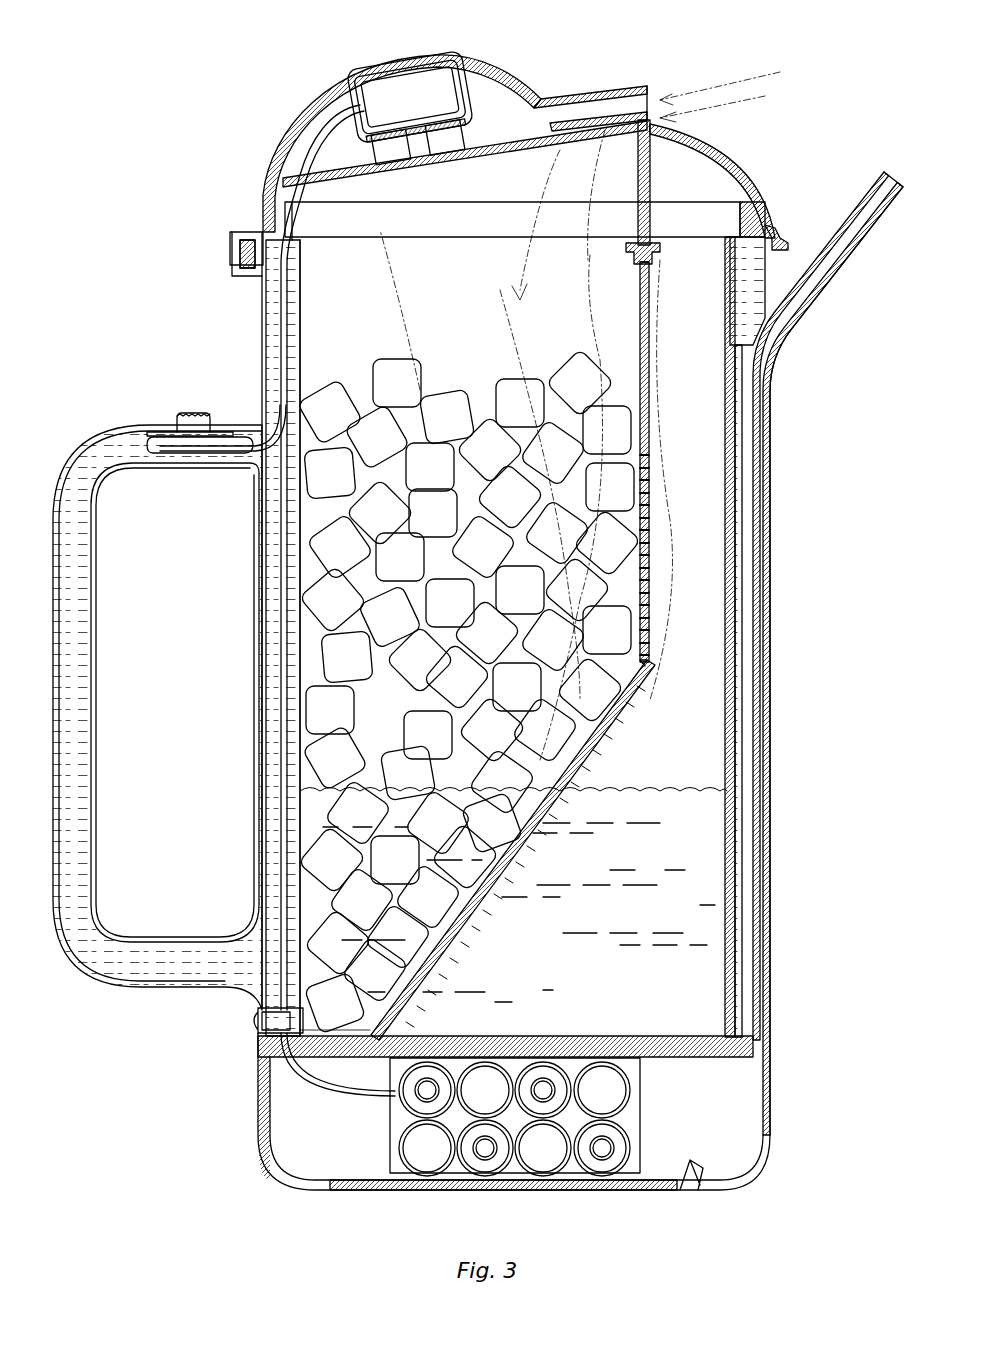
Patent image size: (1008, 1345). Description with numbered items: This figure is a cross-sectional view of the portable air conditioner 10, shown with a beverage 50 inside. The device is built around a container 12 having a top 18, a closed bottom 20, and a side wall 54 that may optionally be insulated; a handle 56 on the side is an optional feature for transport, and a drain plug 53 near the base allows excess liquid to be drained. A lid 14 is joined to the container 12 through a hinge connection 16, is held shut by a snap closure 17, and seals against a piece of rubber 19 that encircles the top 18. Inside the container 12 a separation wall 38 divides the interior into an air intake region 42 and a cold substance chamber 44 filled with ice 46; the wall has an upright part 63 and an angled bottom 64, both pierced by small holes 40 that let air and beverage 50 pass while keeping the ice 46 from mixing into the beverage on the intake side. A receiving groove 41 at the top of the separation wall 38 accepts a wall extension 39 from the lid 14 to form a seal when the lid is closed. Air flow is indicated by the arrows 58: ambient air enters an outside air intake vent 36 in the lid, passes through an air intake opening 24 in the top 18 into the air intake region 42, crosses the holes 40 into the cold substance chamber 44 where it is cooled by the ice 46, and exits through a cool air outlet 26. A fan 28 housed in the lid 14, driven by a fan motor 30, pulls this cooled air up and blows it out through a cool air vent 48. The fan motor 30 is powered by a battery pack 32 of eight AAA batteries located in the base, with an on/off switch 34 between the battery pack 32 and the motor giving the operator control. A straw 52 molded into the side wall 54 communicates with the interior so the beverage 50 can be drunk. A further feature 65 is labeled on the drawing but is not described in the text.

The portable air conditioner 10 is at (142, 52).
The container 12 is at (262, 320).
The lid 14 is at (332, 88).
The hinge connection 16 is at (245, 252).
The snap closure 17 is at (785, 235).
The top 18 is at (556, 240).
The piece of rubber 19 is at (742, 240).
The bottom 20 is at (520, 1038).
The air intake opening 24 is at (675, 252).
The cool air outlet 26 is at (490, 240).
The fan 28 is at (490, 72).
The fan motor 30 is at (385, 90).
The battery pack 32 is at (430, 1148).
The on/off switch 34 is at (190, 410).
The outside air intake vent 36 is at (715, 165).
The separation wall 38 is at (649, 368).
The wall extension 39 is at (638, 150).
The holes 40 is at (649, 480).
The receiving groove 41 is at (636, 246).
The air intake region 42 is at (700, 535).
The cold substance chamber 44 is at (300, 736).
The ice 46 is at (330, 590).
The cool air vent 48 is at (650, 100).
The beverage 50 is at (720, 792).
The straw 52 is at (895, 195).
The drain plug 53 is at (258, 1020).
The side wall 54 is at (270, 296).
The handle 56 is at (94, 640).
The arrows 58 is at (510, 306).
The upright part 63 is at (649, 310).
The bottom 64 is at (520, 850).
The screen joint 65 is at (650, 662).